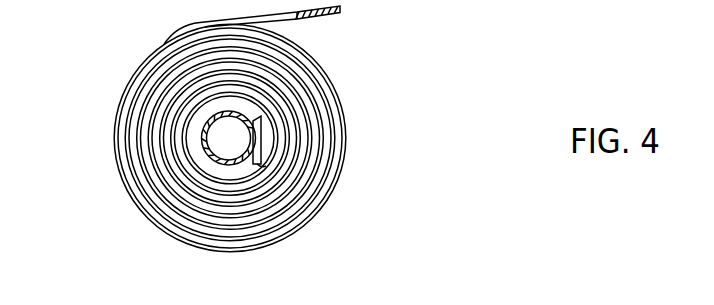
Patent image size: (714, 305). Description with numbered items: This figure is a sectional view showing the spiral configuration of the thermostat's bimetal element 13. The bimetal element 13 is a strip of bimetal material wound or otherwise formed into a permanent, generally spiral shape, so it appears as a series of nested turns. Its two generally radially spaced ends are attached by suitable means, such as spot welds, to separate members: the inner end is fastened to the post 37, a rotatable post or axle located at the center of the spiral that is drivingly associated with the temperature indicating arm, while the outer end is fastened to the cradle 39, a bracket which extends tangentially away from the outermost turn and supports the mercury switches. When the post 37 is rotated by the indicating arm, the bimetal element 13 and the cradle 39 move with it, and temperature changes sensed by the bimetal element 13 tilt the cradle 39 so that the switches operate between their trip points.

The bimetal element 13 is at (130, 77).
The cradle 39 is at (340, 10).
The post 37 is at (261, 157).